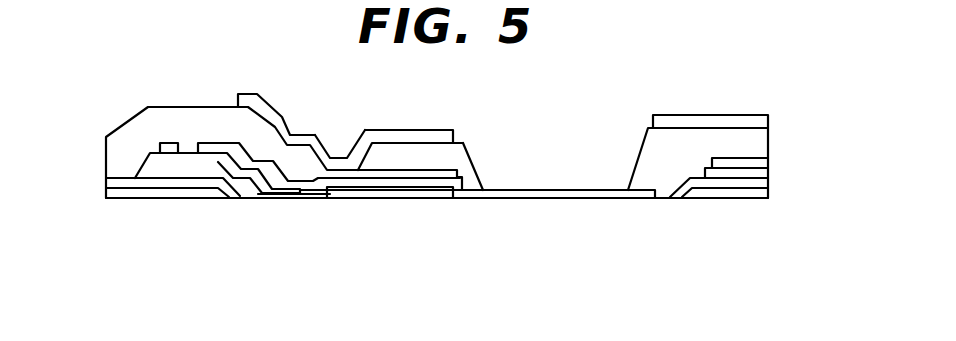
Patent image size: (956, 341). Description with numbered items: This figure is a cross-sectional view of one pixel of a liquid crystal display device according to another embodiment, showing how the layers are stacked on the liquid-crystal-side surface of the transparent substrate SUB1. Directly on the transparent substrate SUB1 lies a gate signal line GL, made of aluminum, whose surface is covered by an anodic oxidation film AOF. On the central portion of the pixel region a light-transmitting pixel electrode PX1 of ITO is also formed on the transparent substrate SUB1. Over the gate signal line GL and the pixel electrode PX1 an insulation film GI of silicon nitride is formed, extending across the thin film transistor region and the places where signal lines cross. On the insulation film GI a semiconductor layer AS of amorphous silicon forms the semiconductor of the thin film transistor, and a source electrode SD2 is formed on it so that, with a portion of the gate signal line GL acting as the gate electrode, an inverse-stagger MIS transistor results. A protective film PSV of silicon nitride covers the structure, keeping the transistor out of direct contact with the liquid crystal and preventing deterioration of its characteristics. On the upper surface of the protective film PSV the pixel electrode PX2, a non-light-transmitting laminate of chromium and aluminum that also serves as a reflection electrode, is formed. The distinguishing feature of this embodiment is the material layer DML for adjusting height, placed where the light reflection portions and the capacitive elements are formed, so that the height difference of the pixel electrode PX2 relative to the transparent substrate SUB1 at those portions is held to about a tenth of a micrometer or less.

The protective film PSV is at (137, 130).
The insulation film GI is at (186, 174).
The semiconductor layer AS is at (220, 158).
The pixel electrode PX2 is at (415, 132).
The pixel electrode PX1 is at (578, 196).
The material layer for adjusting height DML is at (436, 192).
The source electrode SD2 is at (382, 177).
The anodic oxidation film AOF is at (108, 183).
The gate signal line GL is at (168, 198).
The transparent substrate SUB1 is at (282, 220).